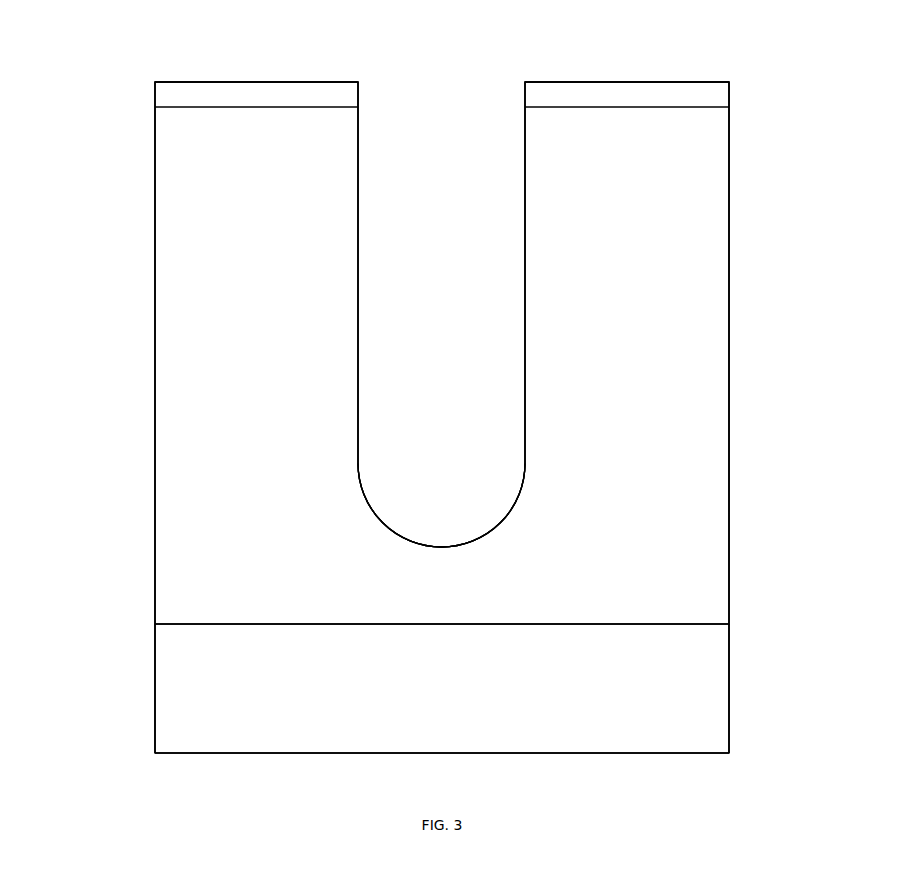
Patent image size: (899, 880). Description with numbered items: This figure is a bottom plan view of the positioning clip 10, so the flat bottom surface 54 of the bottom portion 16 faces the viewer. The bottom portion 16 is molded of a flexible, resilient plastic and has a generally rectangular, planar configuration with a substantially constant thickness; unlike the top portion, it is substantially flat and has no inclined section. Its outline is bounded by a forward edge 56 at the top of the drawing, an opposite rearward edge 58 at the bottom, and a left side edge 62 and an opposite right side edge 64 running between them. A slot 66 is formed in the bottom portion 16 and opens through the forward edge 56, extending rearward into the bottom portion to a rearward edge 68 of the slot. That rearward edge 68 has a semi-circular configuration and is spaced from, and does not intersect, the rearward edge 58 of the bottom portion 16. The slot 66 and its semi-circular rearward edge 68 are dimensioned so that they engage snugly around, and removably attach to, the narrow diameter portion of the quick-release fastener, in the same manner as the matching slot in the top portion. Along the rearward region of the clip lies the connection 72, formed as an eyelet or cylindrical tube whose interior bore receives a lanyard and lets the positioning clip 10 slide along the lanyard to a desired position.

The positioning clip 10 is at (752, 260).
The bottom portion 16 is at (743, 448).
The bottom surface 54 is at (692, 568).
The forward edge 56 is at (248, 82).
The rearward edge 58 is at (643, 754).
The left side edge 62 is at (730, 337).
The right side edge 64 is at (155, 428).
The slot 66 is at (432, 106).
The rearward edge of the slot 68 is at (447, 547).
The connection 72 is at (272, 754).